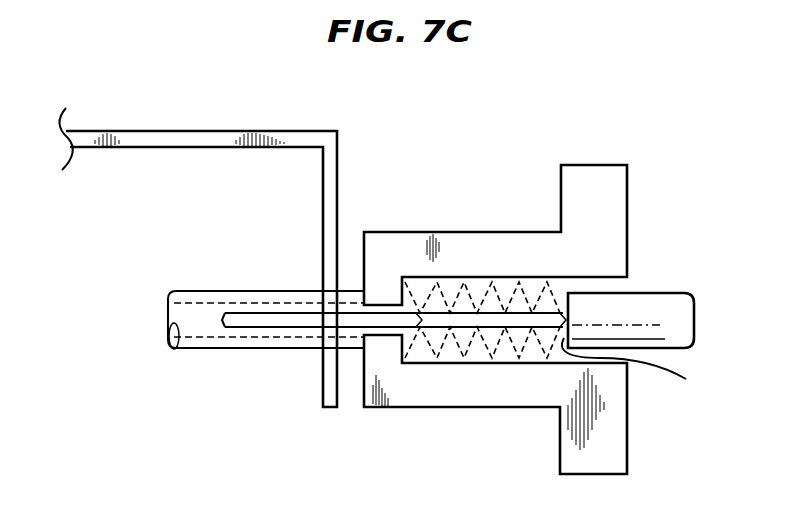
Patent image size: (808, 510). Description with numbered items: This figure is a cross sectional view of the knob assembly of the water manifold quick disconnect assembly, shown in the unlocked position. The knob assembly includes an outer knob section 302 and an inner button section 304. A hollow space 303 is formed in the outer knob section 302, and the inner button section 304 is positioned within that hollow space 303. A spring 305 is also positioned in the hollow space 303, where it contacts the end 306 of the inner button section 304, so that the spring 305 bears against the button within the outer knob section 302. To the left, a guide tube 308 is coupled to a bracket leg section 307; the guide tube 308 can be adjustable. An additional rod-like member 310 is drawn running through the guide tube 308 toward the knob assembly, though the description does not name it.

The outer knob section 302 is at (617, 197).
The hollow space 303 is at (452, 300).
The inner button section 304 is at (683, 320).
The spring 305 is at (508, 363).
The end of inner button section 306 is at (645, 366).
The bracket leg section 307 is at (212, 138).
The guide tube 308 is at (182, 313).
The rod 310 is at (262, 320).